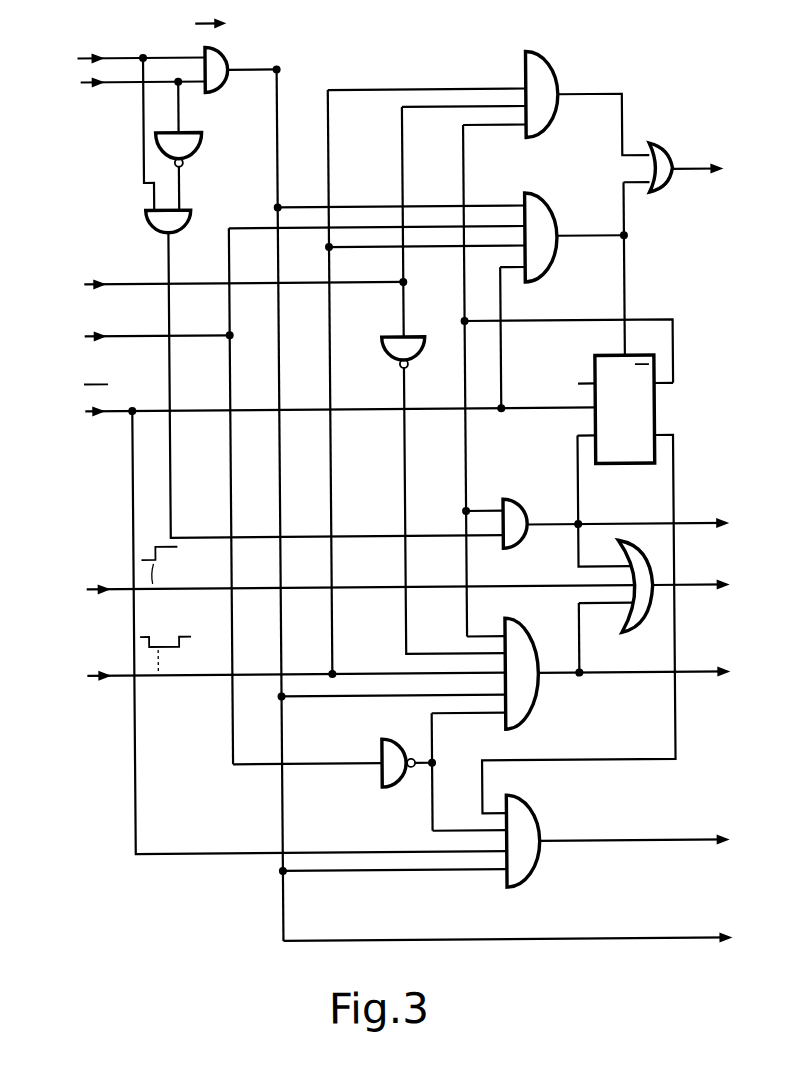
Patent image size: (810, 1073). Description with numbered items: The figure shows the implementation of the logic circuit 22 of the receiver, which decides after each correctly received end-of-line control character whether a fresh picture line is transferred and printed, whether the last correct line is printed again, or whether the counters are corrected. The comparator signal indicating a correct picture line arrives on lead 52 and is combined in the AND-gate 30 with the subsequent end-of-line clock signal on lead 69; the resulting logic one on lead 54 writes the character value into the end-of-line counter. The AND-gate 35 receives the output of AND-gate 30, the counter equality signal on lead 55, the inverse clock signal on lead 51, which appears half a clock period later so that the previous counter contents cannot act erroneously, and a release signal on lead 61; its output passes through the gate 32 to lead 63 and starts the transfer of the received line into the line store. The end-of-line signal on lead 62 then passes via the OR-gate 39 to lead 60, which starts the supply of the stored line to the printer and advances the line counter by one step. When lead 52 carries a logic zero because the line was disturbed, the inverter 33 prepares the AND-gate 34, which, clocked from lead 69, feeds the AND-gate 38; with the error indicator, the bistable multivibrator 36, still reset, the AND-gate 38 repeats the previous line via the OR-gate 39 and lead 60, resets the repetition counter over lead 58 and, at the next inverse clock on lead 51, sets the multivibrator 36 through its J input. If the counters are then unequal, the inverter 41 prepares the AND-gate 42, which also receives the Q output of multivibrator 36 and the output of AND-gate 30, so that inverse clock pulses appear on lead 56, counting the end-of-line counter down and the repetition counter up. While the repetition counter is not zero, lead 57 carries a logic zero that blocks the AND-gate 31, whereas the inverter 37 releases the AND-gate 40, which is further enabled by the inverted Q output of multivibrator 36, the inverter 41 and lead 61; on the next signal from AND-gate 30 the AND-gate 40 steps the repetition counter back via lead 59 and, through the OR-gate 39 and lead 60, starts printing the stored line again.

The logic circuit 22 is at (413, 495).
The AND-gate 30 is at (221, 50).
The AND-gate 31 is at (554, 62).
The AND-gate 32 is at (651, 142).
The inverter 33 is at (200, 136).
The AND-gate 34 is at (148, 212).
The AND-gate 35 is at (547, 208).
The bistable multivibrator 36 is at (655, 416).
The inverter 37 is at (384, 338).
The AND-gate 38 is at (507, 498).
The OR-gate 39 is at (620, 632).
The AND-gate 40 is at (536, 703).
The inverter 41 is at (381, 745).
The AND-gate 42 is at (532, 812).
The lead 51 is at (113, 418).
The lead 52 is at (94, 86).
The lead 54 is at (697, 952).
The lead 55 is at (116, 341).
The lead 56 is at (697, 852).
The lead 57 is at (115, 287).
The lead 58 is at (703, 532).
The lead 59 is at (700, 682).
The lead 60 is at (688, 594).
The lead 61 is at (110, 687).
The lead 62 is at (110, 601).
The lead 63 is at (700, 178).
The lead 69 is at (84, 57).